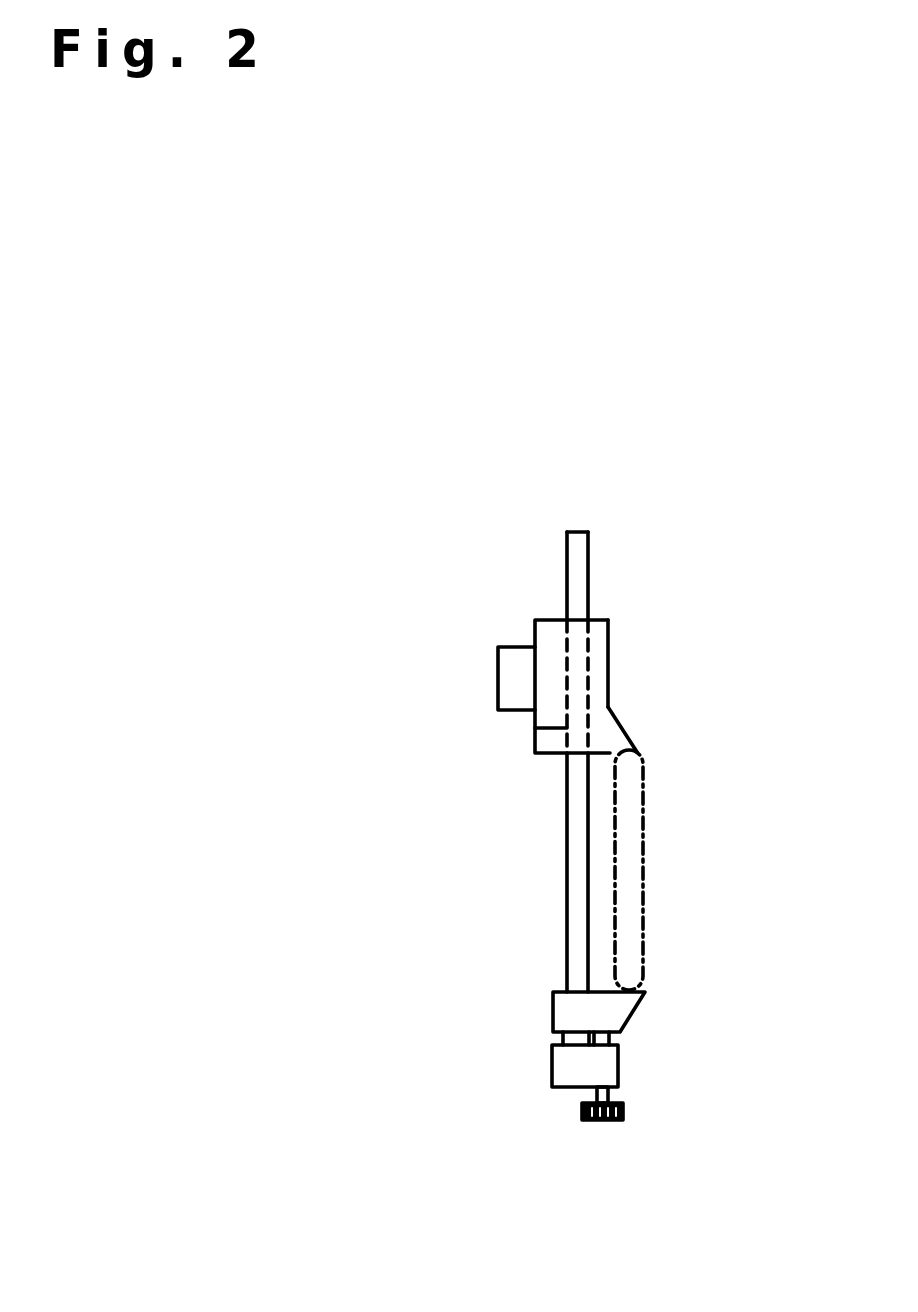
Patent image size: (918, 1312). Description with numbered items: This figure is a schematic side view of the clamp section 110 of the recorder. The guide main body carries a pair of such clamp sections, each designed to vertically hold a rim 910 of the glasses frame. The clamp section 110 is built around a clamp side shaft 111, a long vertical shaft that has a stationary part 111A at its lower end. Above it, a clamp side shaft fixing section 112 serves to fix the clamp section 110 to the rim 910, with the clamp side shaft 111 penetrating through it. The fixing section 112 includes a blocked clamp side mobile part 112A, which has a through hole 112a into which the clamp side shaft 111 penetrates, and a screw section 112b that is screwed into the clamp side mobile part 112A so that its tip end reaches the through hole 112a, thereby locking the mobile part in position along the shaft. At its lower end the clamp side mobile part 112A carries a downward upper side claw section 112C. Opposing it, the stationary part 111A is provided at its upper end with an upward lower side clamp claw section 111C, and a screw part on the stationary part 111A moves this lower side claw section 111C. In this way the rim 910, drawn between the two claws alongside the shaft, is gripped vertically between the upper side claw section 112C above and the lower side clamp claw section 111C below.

The clamp section 110 is at (540, 938).
The clamp side shaft 111 is at (567, 873).
The stationary part 111A is at (543, 1071).
The lower side clamp claw section 111C is at (640, 993).
The clamp side shaft fixing section 112 is at (535, 616).
The clamp side mobile part 112A is at (598, 652).
The upper side claw section 112C is at (637, 753).
The through hole 112a is at (533, 730).
The screw section 112b is at (508, 686).
The rim 910 is at (643, 897).